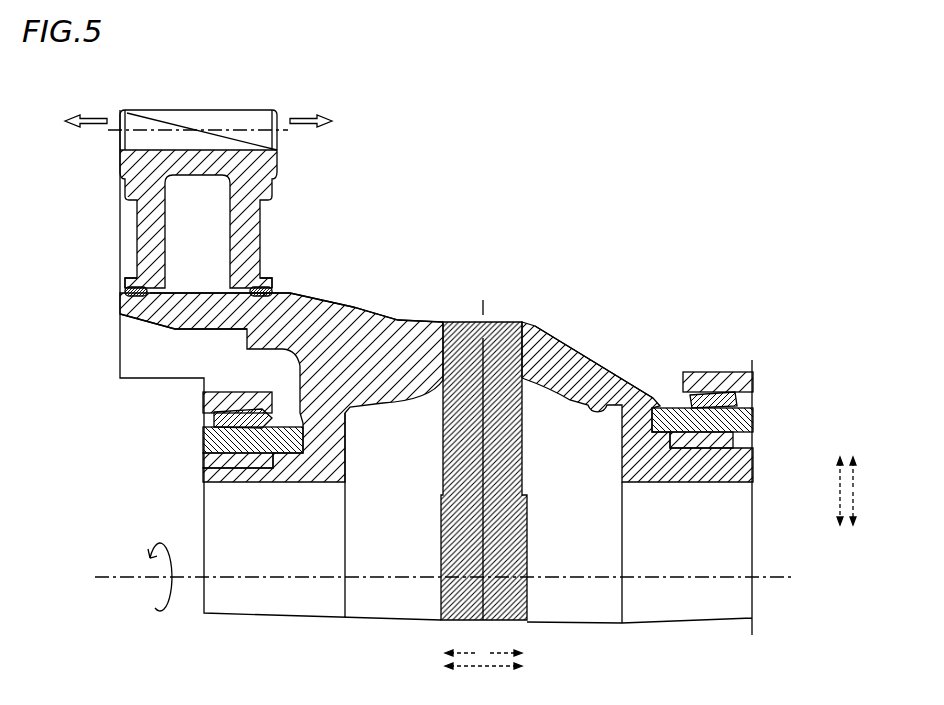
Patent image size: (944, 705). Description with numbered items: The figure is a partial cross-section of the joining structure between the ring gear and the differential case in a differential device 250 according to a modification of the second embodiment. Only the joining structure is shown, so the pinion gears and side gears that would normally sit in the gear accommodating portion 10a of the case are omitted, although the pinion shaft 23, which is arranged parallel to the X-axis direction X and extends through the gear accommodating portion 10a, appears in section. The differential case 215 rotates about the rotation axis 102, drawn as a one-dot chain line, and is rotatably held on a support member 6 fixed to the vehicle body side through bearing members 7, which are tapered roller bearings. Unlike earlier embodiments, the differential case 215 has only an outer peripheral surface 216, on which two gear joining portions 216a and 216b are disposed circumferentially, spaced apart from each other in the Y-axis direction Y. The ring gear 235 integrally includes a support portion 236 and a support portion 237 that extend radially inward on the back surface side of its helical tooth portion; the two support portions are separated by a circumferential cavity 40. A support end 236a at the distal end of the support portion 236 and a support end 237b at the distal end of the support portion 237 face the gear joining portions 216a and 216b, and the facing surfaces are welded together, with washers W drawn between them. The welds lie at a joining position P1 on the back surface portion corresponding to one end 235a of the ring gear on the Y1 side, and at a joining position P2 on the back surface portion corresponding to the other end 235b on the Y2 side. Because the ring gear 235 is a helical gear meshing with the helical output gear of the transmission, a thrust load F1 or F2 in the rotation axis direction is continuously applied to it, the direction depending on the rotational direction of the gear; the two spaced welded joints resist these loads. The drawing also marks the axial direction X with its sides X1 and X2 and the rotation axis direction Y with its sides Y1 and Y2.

The ring gear 235 is at (281, 163).
The one end of ring gear 235a is at (270, 118).
The other end of ring gear 235b is at (128, 118).
The support portion 236 is at (182, 111).
The support end 236a is at (277, 280).
The support portion 237 is at (138, 233).
The support end 237b is at (127, 280).
The washer W is at (122, 303).
The joining position P1 is at (279, 286).
The joining position P2 is at (114, 290).
The thrust load F1 is at (310, 110).
The thrust load F2 is at (88, 110).
The outer peripheral surface 216 is at (408, 322).
The gear joining portion 216a is at (300, 302).
The gear joining portion 216b is at (140, 313).
The circumferential cavity 40 is at (201, 298).
The pinion shaft 23 is at (525, 405).
The differential case 215 is at (580, 355).
The gear accommodating portion 10a is at (612, 403).
The differential device 250 is at (810, 114).
The support member 6 is at (202, 408).
The bearing members 7 is at (202, 446).
The rotation axis 102 is at (110, 576).
The X-axis direction X is at (828, 491).
The X1 side X1 is at (870, 474).
The X2 side X2 is at (870, 508).
The Y-axis direction Y is at (483, 679).
The Y1 side Y1 is at (504, 641).
The Y2 side Y2 is at (462, 641).